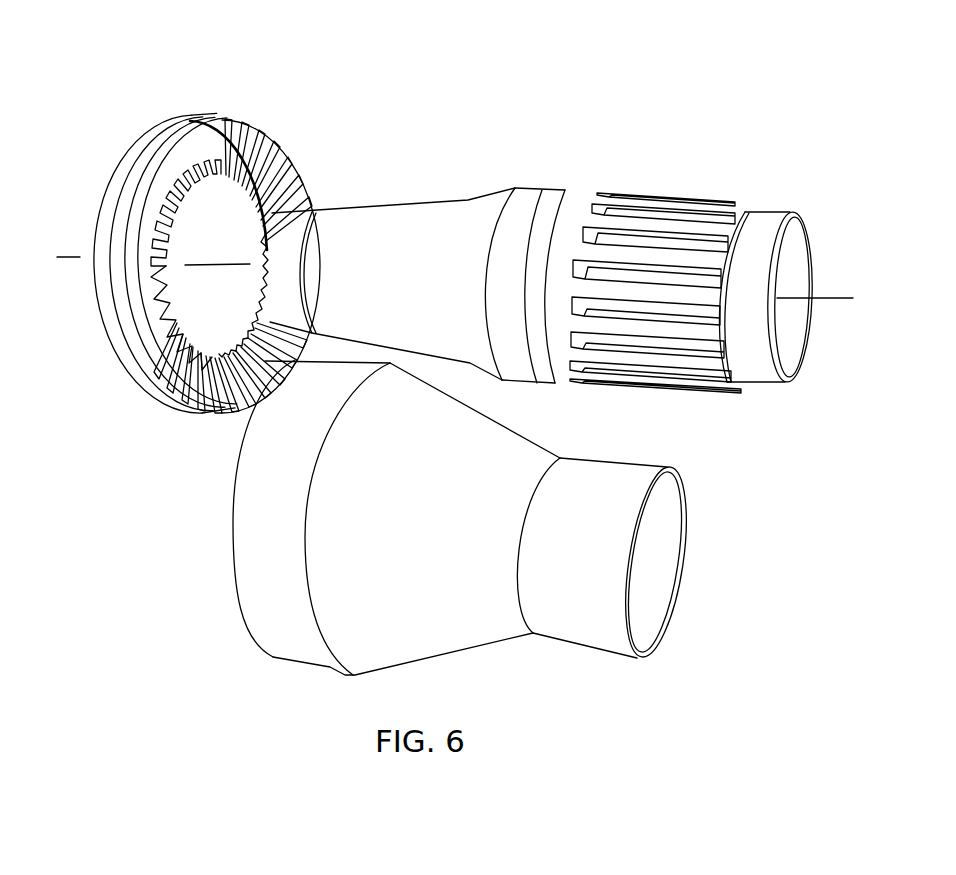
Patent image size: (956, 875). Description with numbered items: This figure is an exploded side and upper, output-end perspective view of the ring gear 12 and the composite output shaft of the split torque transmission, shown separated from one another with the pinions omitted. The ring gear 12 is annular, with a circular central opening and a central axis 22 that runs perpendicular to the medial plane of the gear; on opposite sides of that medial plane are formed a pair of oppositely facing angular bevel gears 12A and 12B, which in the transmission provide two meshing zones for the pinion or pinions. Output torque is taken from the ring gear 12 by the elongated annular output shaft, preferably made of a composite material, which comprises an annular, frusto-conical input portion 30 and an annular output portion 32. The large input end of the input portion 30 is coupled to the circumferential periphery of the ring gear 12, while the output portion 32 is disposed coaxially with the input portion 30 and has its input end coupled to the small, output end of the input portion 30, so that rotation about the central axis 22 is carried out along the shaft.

The ring gear 12 is at (229, 116).
The angular bevel gear 12A is at (278, 162).
The angular bevel gear 12B is at (108, 184).
The central axis 22 is at (62, 259).
The frusto-conical input portion 30 is at (448, 200).
The annular output portion 32 is at (618, 463).